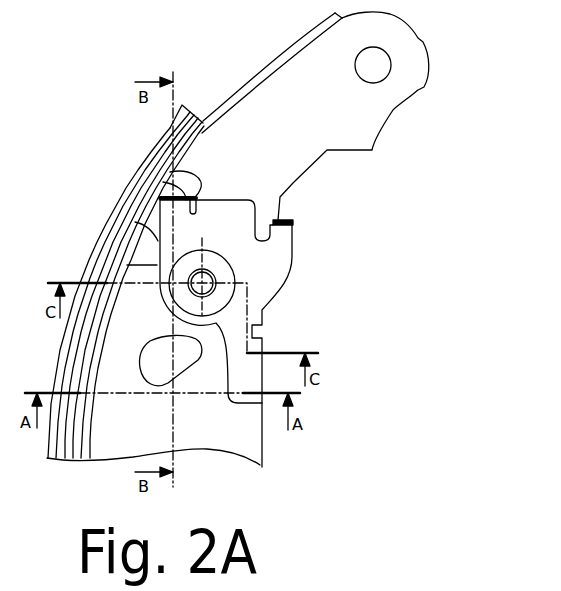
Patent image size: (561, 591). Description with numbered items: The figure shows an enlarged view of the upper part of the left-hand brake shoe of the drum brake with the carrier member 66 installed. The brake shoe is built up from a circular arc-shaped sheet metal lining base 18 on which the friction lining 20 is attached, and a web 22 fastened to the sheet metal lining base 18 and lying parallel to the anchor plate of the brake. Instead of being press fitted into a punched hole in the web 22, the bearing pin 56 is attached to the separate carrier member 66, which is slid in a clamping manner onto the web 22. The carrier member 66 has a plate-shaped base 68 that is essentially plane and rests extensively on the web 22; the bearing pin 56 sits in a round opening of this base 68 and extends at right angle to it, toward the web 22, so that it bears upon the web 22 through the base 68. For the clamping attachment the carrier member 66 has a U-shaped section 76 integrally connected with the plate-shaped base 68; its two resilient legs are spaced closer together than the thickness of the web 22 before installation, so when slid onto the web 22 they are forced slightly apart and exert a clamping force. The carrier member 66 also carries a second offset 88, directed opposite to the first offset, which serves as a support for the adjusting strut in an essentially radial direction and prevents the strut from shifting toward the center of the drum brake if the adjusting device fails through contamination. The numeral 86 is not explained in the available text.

The sheet metal lining base 18 is at (235, 95).
The friction lining 20 is at (117, 225).
The web 22 is at (342, 117).
The bearing pin 56 is at (213, 297).
The carrier member 66 is at (236, 188).
The plate-shaped base 68 is at (227, 240).
The U-shaped section 76 is at (247, 372).
The belt section 86 is at (180, 185).
The second offset 88 is at (288, 213).